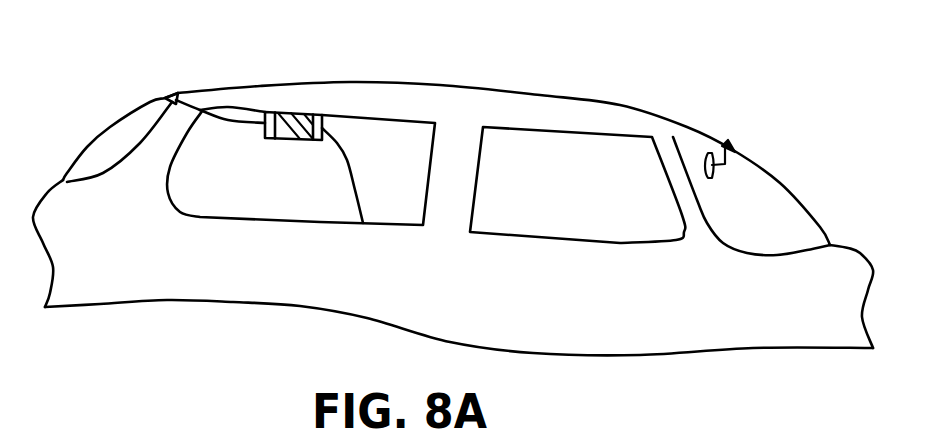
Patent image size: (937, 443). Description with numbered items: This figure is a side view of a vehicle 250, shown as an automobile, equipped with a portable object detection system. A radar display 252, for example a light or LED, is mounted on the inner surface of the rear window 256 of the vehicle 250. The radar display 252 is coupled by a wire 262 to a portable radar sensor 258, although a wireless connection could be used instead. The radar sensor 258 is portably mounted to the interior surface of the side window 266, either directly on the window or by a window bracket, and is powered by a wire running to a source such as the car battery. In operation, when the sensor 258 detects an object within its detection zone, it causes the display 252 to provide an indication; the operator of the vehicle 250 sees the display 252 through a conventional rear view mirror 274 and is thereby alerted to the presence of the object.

The vehicle 250 is at (578, 97).
The radar display 252 is at (172, 95).
The rear window 256 is at (100, 138).
The portable radar sensor 258 is at (292, 112).
The wire 262 is at (230, 116).
The side window 266 is at (388, 133).
The rear view mirror 274 is at (707, 153).